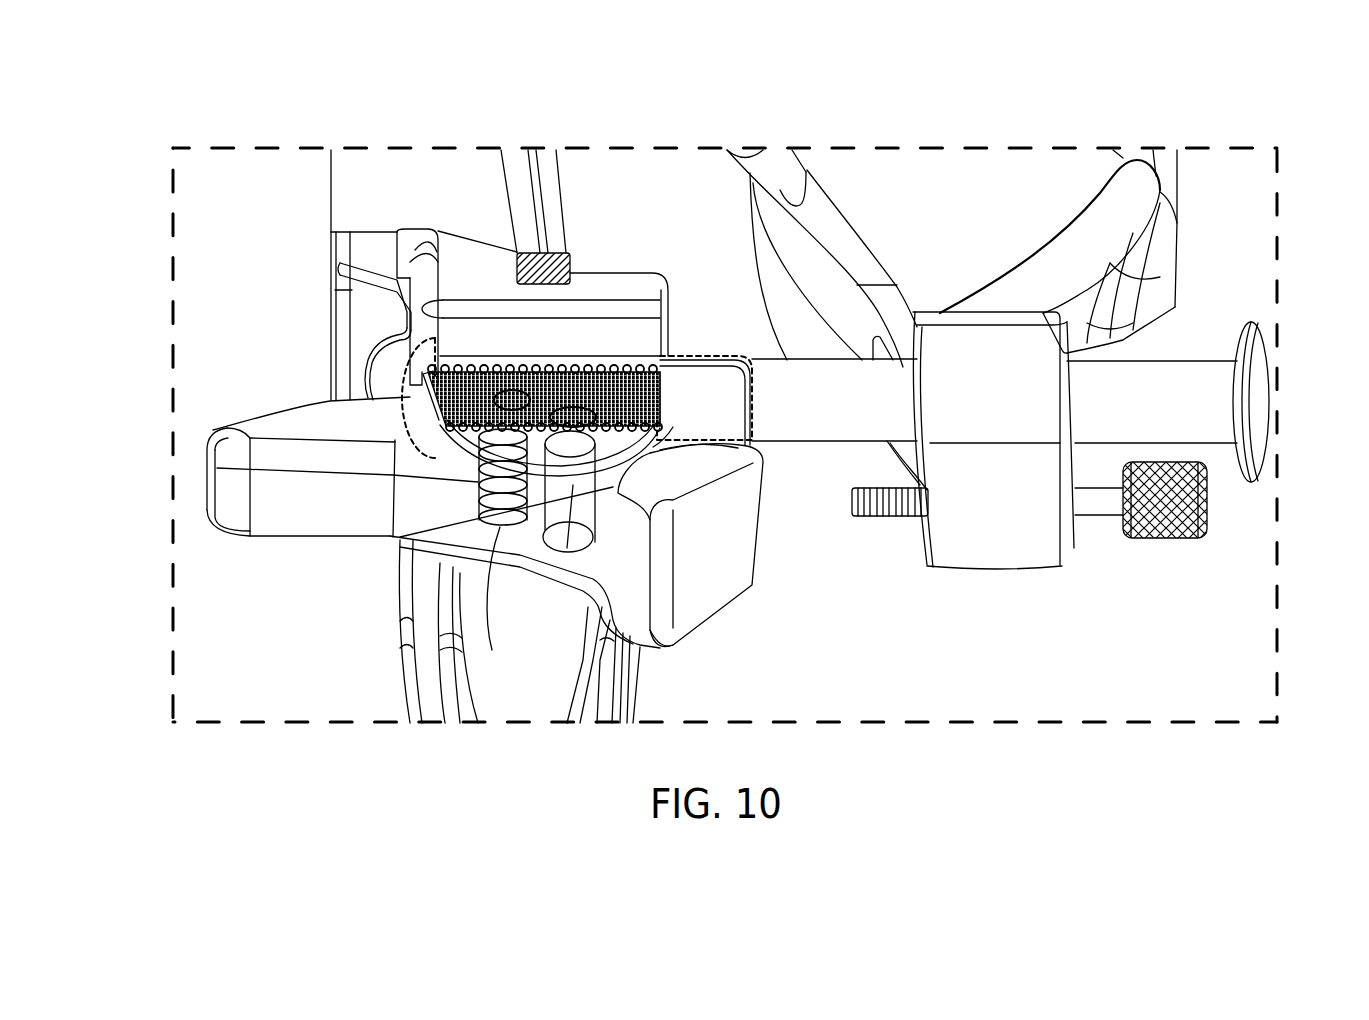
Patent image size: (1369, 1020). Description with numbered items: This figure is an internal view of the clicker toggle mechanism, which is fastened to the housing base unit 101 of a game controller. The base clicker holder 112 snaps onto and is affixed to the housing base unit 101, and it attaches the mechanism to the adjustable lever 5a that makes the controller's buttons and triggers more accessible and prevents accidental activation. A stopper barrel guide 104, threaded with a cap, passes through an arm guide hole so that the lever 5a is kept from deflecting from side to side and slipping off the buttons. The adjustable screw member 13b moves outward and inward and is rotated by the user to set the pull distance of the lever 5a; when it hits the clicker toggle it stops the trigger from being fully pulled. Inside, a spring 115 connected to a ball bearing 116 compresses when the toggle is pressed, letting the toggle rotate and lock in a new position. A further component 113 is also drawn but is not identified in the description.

The housing base unit 101 is at (330, 191).
The base clicker holder 112 is at (455, 288).
The handle 113 is at (237, 480).
The spring 115 is at (515, 477).
The ball bearing 116 is at (492, 650).
The stopper barrel guide 104 is at (1200, 363).
The adjustable screw member 13b is at (1163, 538).
The adjustable lever 5a is at (1167, 177).